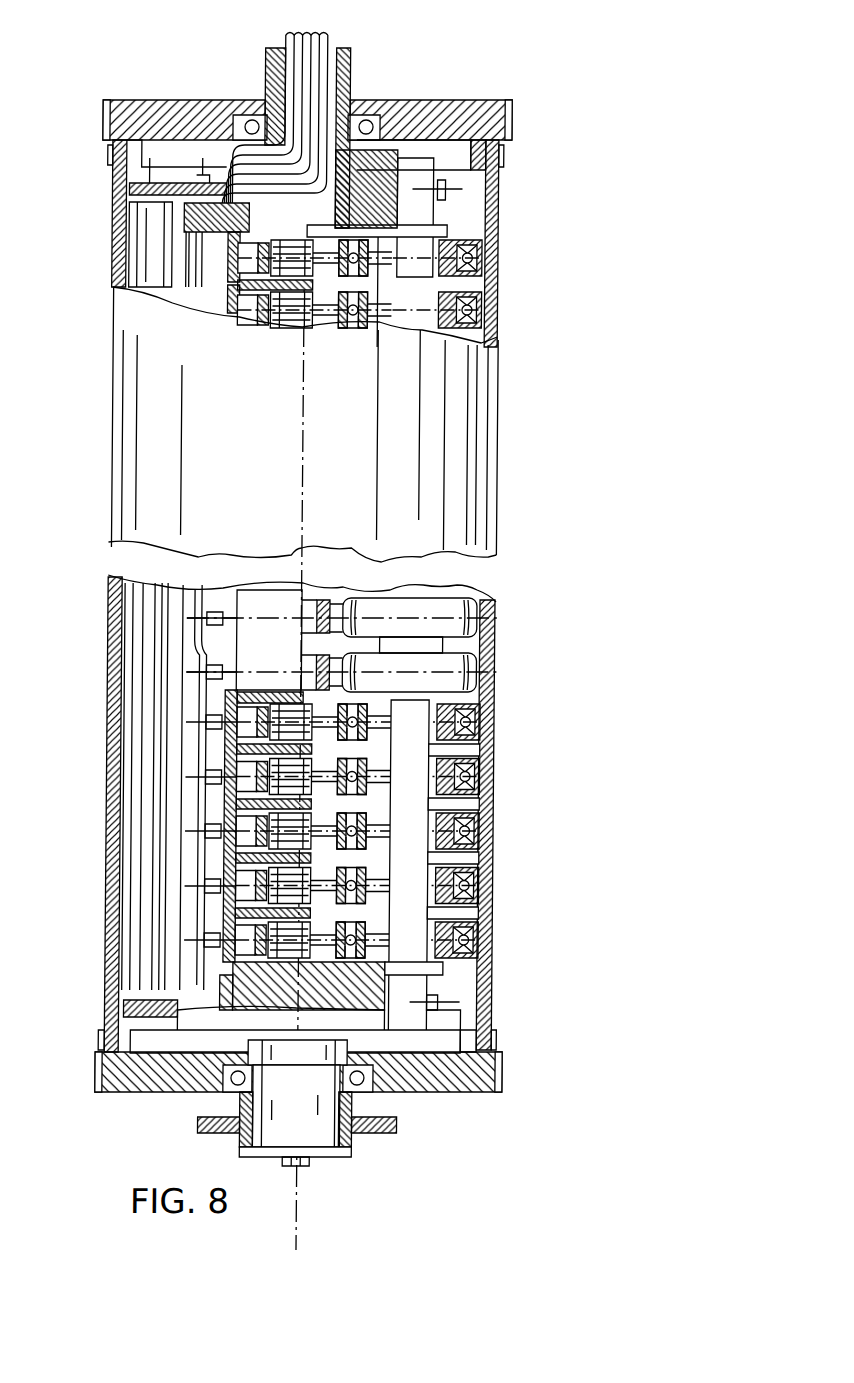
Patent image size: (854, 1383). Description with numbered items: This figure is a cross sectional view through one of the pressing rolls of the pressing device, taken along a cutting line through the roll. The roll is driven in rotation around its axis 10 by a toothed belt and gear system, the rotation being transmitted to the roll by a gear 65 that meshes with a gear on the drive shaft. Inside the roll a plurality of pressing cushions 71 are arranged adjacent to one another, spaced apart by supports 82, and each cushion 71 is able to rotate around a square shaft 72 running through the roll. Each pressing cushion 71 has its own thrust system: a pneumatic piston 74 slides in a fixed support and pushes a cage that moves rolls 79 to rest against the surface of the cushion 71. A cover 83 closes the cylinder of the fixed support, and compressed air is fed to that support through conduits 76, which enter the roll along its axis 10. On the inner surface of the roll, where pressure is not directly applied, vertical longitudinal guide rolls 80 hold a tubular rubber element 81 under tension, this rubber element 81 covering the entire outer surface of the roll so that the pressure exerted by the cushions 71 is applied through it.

The axis 10 is at (302, 1235).
The gear 65 is at (494, 115).
The pressing cushion 71 is at (480, 737).
The square shaft 72 is at (421, 938).
The pneumatic piston 74 is at (257, 277).
The conduit 76 is at (313, 35).
The roll 79 is at (487, 708).
The vertical longitudinal guide roll 80 is at (137, 237).
The tubular rubber element 81 is at (495, 237).
The support 82 is at (439, 803).
The cover 83 is at (245, 831).